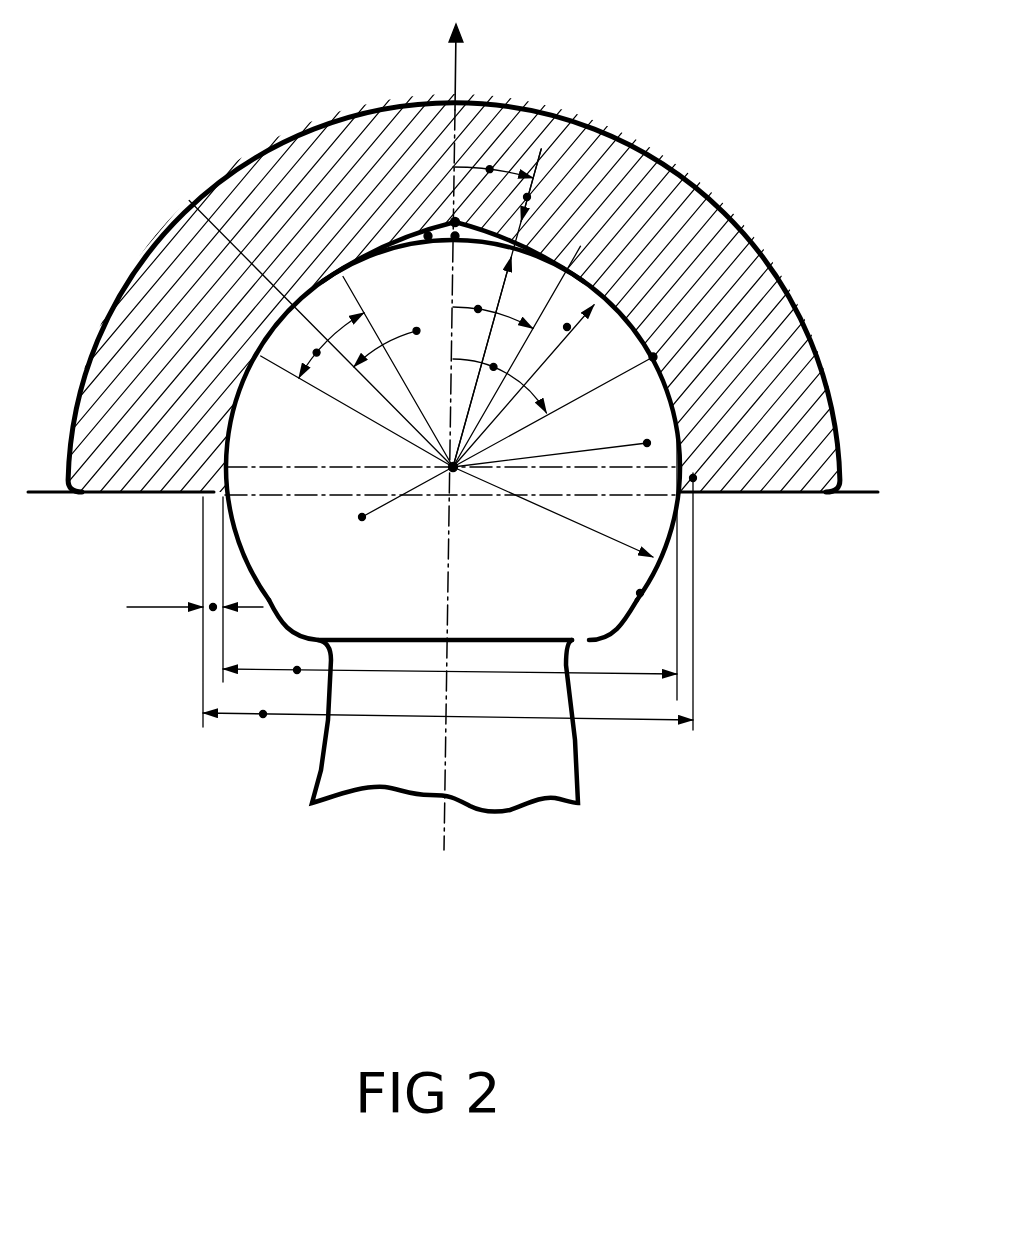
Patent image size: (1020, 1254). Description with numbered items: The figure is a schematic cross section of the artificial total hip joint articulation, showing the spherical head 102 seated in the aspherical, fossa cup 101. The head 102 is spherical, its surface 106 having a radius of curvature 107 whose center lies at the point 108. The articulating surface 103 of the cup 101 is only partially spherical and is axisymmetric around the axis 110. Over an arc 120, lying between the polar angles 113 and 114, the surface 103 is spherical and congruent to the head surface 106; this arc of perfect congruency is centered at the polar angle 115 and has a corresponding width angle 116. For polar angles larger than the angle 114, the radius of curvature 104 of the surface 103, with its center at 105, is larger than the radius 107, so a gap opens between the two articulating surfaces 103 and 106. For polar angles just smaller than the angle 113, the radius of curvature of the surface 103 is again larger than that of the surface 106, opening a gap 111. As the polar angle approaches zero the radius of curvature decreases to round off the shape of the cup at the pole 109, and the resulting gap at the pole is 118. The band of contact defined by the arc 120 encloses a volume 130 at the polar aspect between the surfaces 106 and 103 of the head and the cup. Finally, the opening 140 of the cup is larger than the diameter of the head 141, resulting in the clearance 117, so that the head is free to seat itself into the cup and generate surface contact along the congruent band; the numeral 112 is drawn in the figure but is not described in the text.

The cup 101 is at (312, 168).
The head 102 is at (270, 528).
The articulating surface of the cup 103 is at (693, 478).
The radius of curvature 104 is at (647, 443).
The center 105 is at (362, 517).
The head surface 106 is at (640, 593).
The radius of curvature 107 is at (633, 325).
The point 108 is at (453, 467).
The pole 109 is at (455, 222).
The axis 110 is at (458, 63).
The gap 111 is at (527, 197).
The angle 112 is at (490, 169).
The polar angle 113 is at (574, 262).
The polar angle 114 is at (653, 357).
The polar angle 115 is at (416, 331).
The width angle 116 is at (317, 353).
The clearance 117 is at (213, 607).
The gap at the pole 118 is at (455, 236).
The arc 120 is at (567, 327).
The volume 130 is at (428, 236).
The opening of the cup 140 is at (263, 714).
The diameter of the head 141 is at (297, 670).